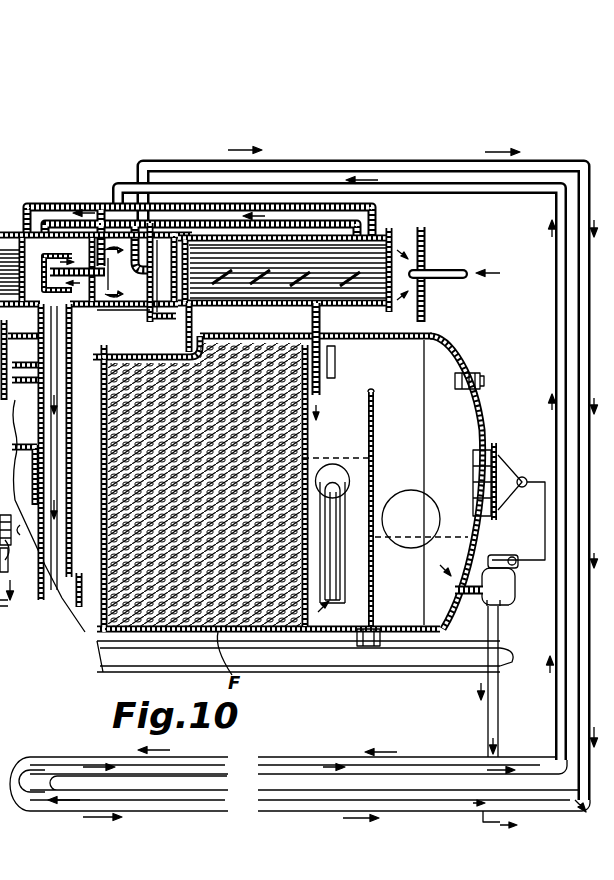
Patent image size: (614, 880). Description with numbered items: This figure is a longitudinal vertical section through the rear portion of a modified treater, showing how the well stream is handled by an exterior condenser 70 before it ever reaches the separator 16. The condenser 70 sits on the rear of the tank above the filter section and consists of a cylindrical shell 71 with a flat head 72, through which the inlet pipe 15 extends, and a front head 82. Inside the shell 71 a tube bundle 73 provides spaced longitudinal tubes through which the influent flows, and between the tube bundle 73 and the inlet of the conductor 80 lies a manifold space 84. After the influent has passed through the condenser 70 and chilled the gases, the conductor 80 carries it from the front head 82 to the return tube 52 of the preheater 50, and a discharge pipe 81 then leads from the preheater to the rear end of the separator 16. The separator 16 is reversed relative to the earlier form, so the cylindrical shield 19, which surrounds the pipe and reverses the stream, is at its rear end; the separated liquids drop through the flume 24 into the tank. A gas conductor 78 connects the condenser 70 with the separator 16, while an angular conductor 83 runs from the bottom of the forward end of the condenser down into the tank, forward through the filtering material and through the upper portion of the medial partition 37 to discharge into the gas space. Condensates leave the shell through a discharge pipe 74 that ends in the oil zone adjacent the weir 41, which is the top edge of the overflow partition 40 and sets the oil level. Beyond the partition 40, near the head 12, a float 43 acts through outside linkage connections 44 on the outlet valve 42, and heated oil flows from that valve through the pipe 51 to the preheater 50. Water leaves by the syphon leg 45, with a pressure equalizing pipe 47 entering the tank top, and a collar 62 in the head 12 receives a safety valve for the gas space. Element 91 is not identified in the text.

The head 12 is at (483, 425).
The inlet pipe 15 is at (447, 267).
The gas separator 16 is at (0, 163).
The cylindrical shield 19 is at (52, 258).
The flume 24 is at (57, 600).
The vertical medial partition 37 is at (100, 627).
The overflow partition 40 is at (377, 494).
The weir 41 is at (374, 388).
The outlet valve 42 is at (510, 573).
The float 43 is at (413, 507).
The linkage connections 44 is at (543, 503).
The water discharge pipe or syphon leg 45 is at (327, 551).
The pressure equalizing pipe 47 is at (338, 379).
The preheater or heat exchanger 50 is at (328, 757).
The pipe 51 is at (490, 712).
The return tube 52 is at (132, 758).
The collar 62 is at (482, 379).
The condenser 70 is at (383, 233).
The cylindrical drum or shell 71 is at (309, 235).
The flat head 72 is at (428, 248).
The tube bundle 73 is at (203, 245).
The discharge pipe 74 is at (285, 326).
The gas conductor 78 is at (270, 212).
The conductor 80 is at (385, 160).
The discharge pipe 81 is at (114, 183).
The front head 82 is at (160, 223).
The angular conductor 83 is at (193, 324).
The manifold space 84 is at (162, 296).
The outlet 91 is at (0, 606).